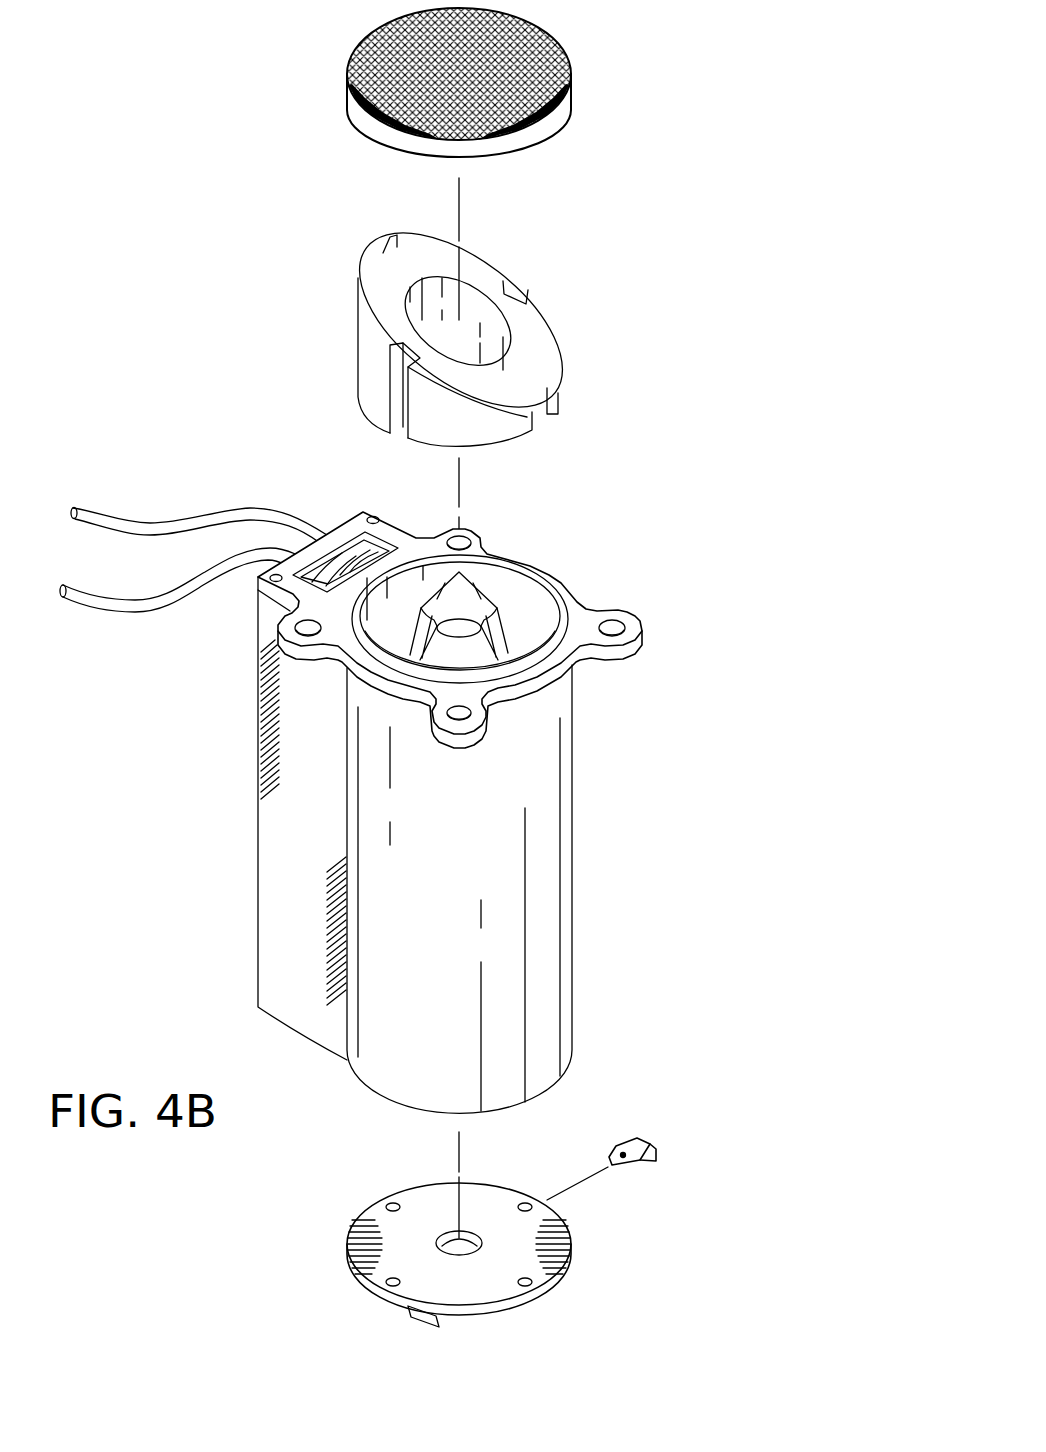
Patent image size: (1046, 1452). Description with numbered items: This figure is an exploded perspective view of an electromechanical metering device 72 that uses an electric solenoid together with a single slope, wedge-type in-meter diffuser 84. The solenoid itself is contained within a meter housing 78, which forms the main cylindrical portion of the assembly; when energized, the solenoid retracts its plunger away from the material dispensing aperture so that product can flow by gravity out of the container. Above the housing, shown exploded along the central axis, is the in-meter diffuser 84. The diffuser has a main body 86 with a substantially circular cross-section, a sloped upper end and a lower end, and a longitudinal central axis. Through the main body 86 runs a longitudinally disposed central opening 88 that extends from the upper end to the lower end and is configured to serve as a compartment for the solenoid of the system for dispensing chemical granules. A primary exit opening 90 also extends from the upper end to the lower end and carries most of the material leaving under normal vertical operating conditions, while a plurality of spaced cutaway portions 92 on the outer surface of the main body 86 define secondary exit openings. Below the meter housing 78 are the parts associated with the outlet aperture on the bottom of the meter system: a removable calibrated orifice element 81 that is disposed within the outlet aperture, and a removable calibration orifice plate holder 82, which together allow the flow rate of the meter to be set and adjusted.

The metering device 72 is at (737, 390).
The meter housing 78 is at (572, 853).
The removable calibrated orifice element 81 is at (647, 1142).
The removable calibration orifice plate holder 82 is at (488, 1184).
The in-meter diffuser 84 is at (545, 307).
The main body 86 is at (358, 327).
The central opening 88 is at (475, 302).
The primary exit opening 90 is at (538, 423).
The cutaway portions 92 is at (381, 241).